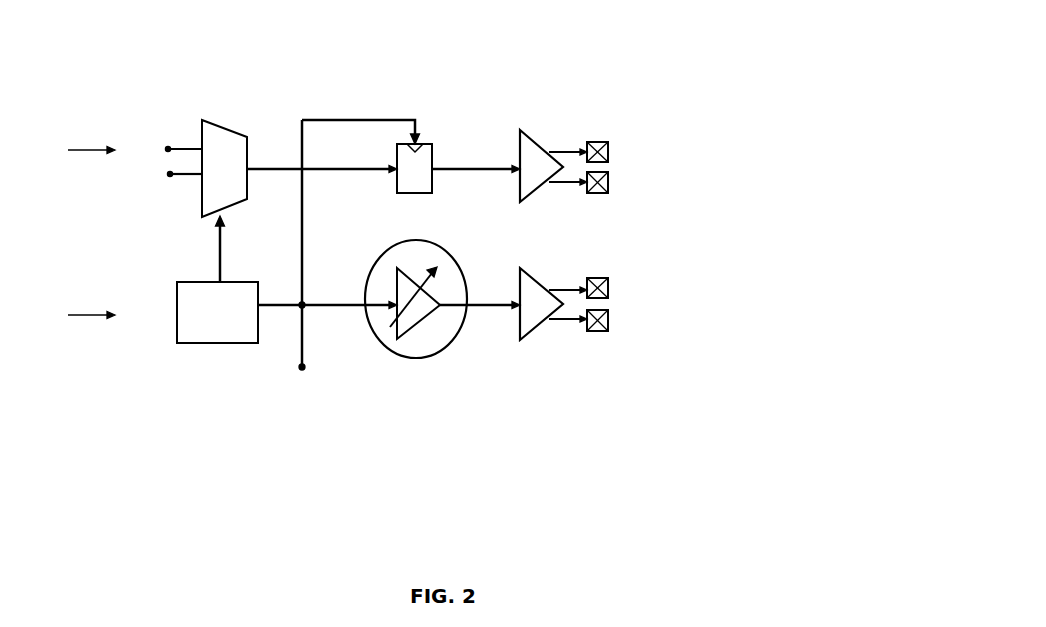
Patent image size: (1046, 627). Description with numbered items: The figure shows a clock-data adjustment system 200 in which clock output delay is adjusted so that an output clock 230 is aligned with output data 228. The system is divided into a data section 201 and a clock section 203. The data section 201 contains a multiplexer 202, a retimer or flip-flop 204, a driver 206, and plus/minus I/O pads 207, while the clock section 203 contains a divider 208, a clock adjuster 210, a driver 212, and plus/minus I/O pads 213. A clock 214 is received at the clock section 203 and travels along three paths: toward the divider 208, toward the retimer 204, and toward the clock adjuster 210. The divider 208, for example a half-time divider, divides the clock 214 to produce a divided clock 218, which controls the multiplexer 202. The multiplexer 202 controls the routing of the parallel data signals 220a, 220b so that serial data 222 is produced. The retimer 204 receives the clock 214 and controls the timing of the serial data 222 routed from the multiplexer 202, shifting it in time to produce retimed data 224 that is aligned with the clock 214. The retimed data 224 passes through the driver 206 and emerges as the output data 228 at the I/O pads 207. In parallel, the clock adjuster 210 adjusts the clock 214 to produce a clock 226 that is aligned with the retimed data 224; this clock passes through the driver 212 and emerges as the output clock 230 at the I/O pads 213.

The clock-data adjustment system 200 is at (910, 24).
The data section 201 is at (74, 150).
The clock section 203 is at (75, 315).
The multiplexer 202 is at (238, 126).
The parallel data signal 220a is at (170, 145).
The parallel data signal 220b is at (170, 180).
The divided clock 218 is at (218, 268).
The divider 208 is at (210, 344).
The clock 214 is at (305, 329).
The serial data 222 is at (346, 168).
The retimer 204 is at (428, 144).
The retimed data 224 is at (457, 168).
The driver 206 is at (543, 138).
The output data 228 is at (572, 182).
The +/− I/O pads 207 is at (608, 172).
The clock adjuster 210 is at (458, 341).
The adjusted clock 226 is at (484, 298).
The driver 212 is at (544, 275).
The output clock 230 is at (573, 318).
The +/− I/O pads 213 is at (603, 331).